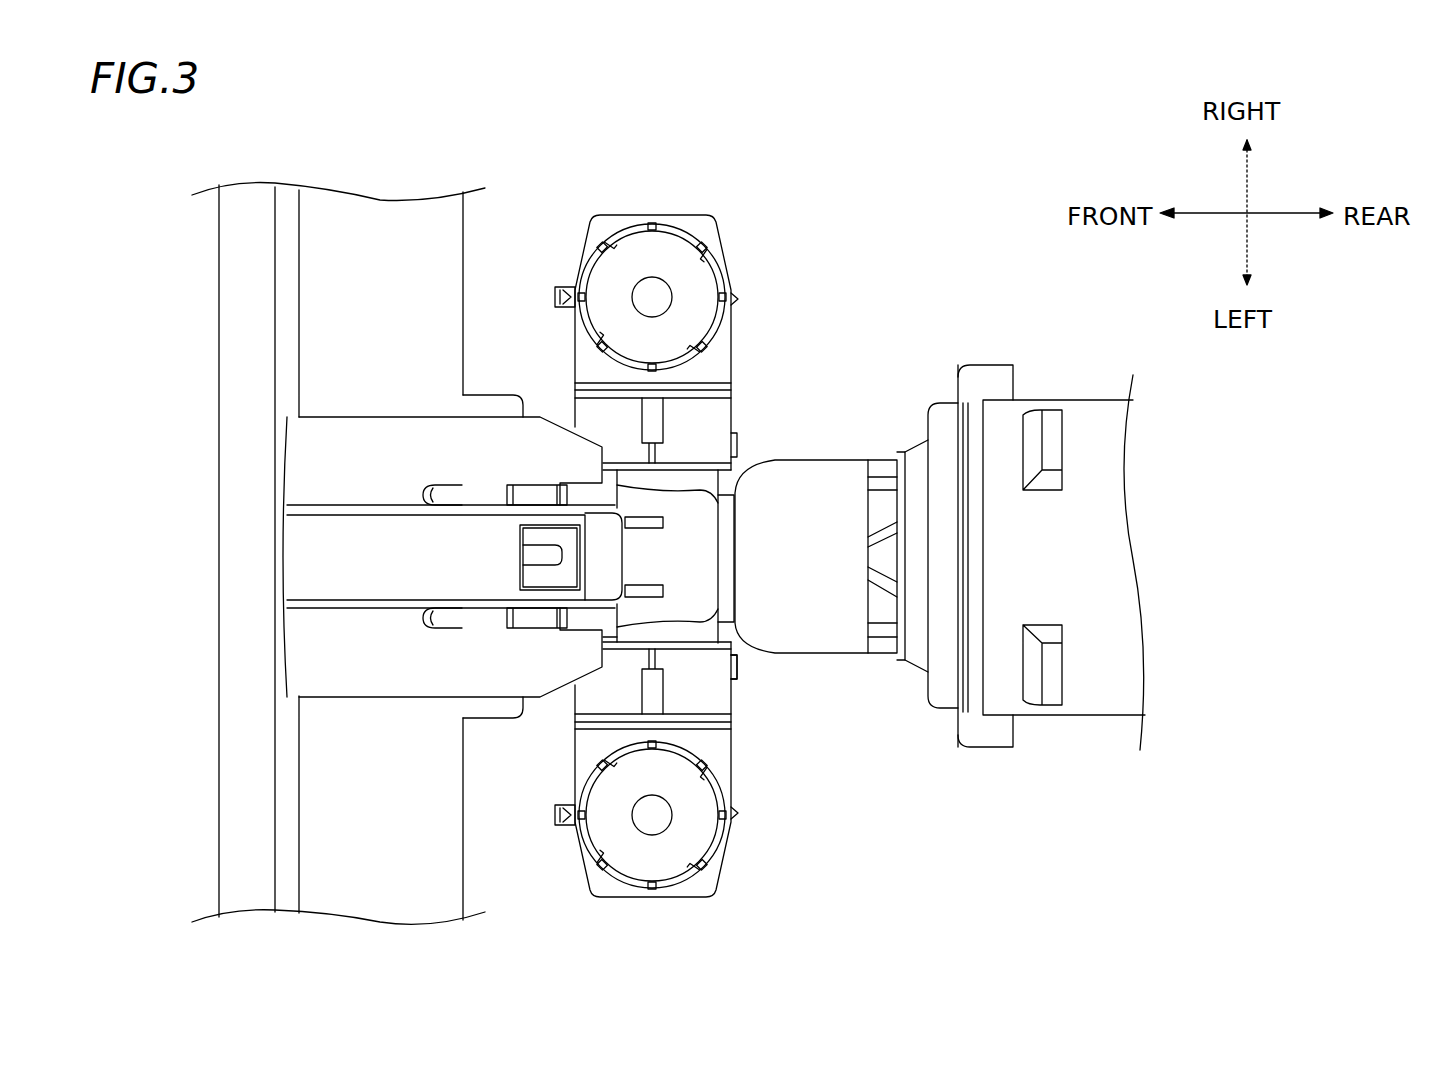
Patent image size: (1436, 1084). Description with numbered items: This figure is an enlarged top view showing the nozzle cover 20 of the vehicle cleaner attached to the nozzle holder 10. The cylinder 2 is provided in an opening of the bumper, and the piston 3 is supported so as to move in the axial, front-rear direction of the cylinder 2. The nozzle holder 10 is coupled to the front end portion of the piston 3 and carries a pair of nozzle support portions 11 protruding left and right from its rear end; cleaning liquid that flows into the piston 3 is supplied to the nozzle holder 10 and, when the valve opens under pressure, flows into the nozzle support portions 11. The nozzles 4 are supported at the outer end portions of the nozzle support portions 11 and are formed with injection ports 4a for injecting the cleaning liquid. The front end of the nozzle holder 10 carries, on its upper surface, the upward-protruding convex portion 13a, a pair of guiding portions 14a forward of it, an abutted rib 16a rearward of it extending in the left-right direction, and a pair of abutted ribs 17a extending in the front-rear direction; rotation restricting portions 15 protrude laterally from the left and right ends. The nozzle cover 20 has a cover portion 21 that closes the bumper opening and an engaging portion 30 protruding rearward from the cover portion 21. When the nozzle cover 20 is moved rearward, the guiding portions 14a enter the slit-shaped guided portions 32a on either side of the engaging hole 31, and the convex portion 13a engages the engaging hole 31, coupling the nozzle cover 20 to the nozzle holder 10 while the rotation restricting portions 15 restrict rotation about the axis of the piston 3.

The cylinder 2 is at (1085, 398).
The piston 3 is at (838, 460).
The nozzle 4 is at (686, 547).
The injection port 4a is at (722, 275).
The nozzle holder 10 is at (707, 503).
The nozzle support portion 11 is at (733, 357).
The convex portion 13a is at (580, 556).
The guiding portion 14a is at (462, 487).
The rotation restricting portion 15 is at (513, 404).
The abutted rib 16a is at (603, 655).
The abutted rib 17a is at (665, 518).
The nozzle cover 20 is at (298, 554).
The cover portion 21 is at (216, 350).
The engaging portion 30 is at (449, 539).
The engaging hole 31 is at (522, 578).
The guided portion 32a is at (535, 487).